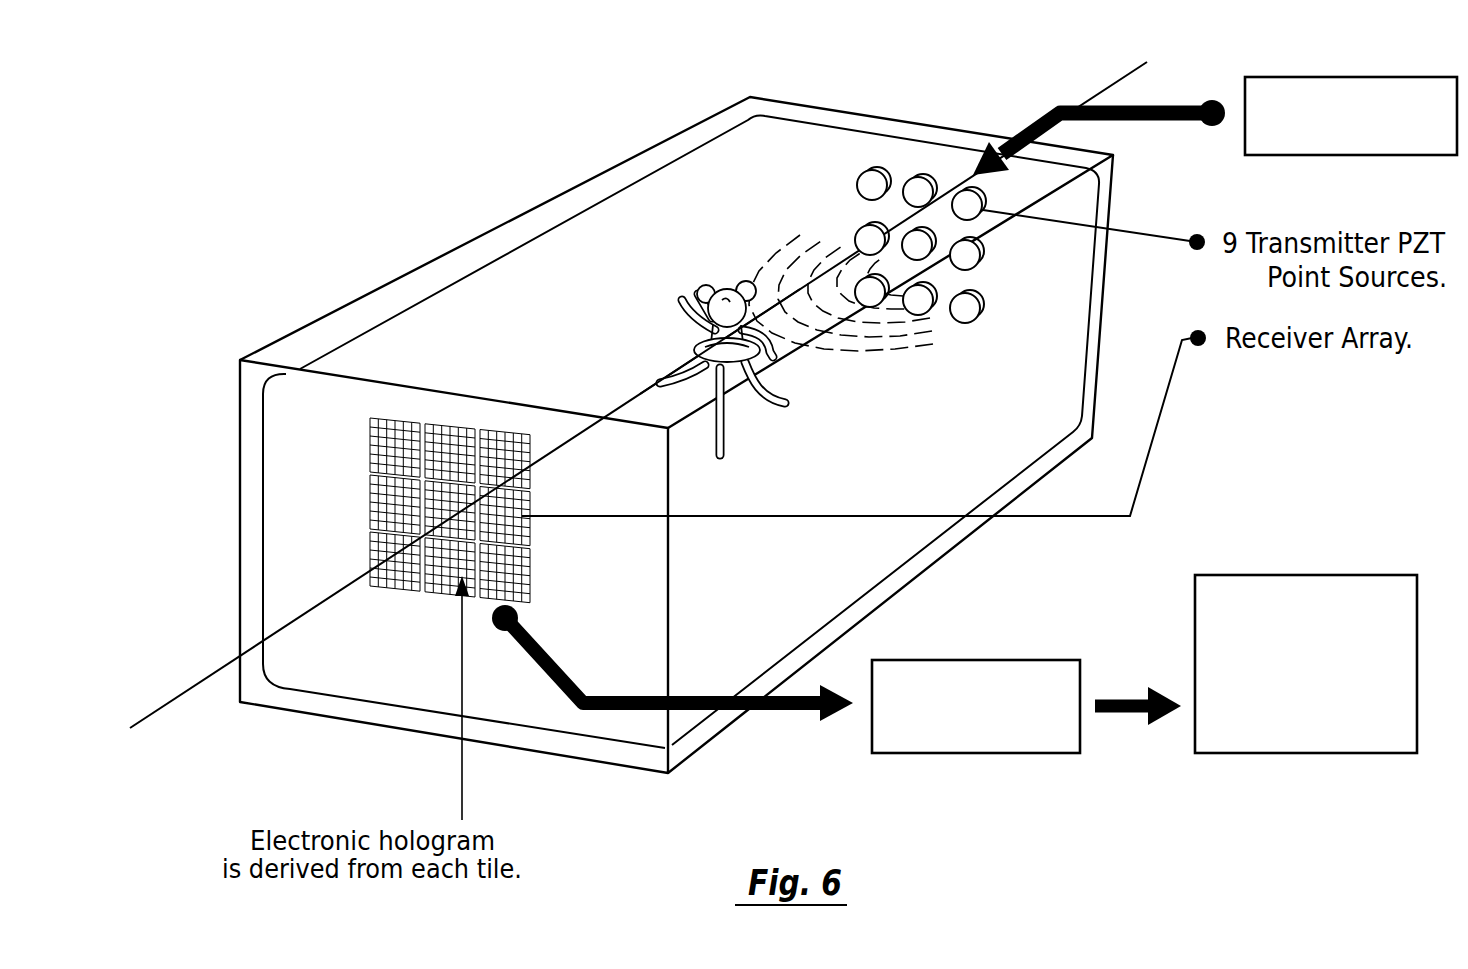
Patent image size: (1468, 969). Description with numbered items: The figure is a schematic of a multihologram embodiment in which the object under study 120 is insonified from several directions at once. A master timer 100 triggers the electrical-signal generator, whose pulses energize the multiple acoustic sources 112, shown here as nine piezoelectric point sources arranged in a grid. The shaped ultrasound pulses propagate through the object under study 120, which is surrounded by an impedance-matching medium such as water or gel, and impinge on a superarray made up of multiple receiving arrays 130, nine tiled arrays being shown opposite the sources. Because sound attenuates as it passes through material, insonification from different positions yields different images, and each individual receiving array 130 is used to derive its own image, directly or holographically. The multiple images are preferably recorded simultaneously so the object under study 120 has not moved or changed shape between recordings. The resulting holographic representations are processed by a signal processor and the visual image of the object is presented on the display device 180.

The master timer 100 is at (1337, 77).
The acoustic sources 112 is at (965, 190).
The object under study 120 is at (717, 285).
The receiving array 130 is at (403, 457).
The display device 180 is at (1330, 575).